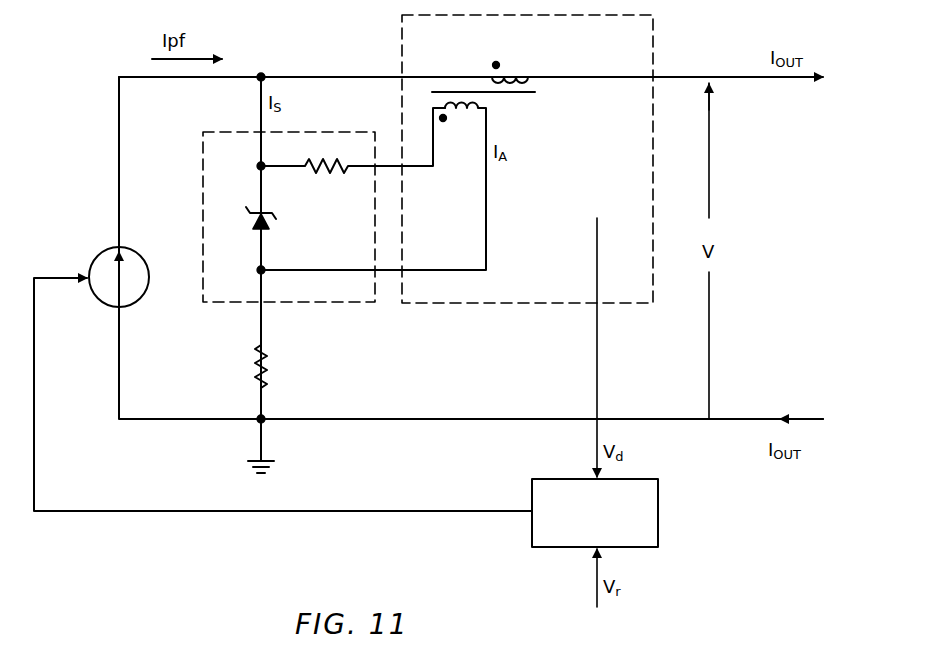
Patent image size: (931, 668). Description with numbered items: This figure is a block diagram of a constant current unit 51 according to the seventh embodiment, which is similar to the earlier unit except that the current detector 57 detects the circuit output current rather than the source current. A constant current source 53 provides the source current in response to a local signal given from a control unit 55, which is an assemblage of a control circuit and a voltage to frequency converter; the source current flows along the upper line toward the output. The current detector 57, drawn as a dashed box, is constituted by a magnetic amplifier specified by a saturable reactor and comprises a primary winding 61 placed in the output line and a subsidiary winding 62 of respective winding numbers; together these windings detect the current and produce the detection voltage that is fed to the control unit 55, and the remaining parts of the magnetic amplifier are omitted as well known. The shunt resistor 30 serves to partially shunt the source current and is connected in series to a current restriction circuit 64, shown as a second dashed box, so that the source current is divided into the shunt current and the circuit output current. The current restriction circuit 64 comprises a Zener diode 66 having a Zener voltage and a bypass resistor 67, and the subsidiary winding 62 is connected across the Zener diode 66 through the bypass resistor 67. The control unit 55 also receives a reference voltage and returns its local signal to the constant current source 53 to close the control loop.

The shunt resistor 30 is at (265, 380).
The constant current unit 51 is at (245, 525).
The constant current source 53 is at (143, 246).
The control unit 55 is at (660, 510).
The current detector 57 is at (470, 305).
The primary winding 61 is at (524, 70).
The subsidiary winding 62 is at (471, 116).
The current restriction circuit 64 is at (238, 304).
The Zener diode 66 is at (268, 232).
The bypass resistor 67 is at (343, 171).